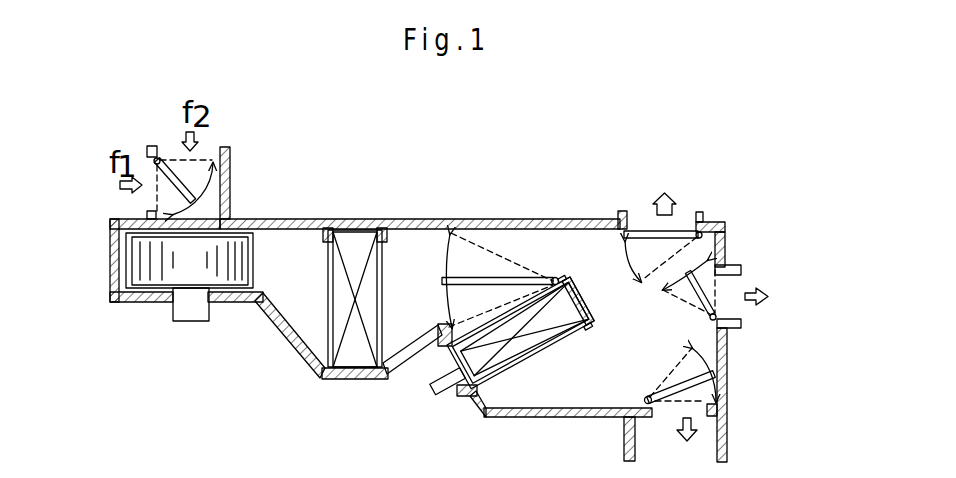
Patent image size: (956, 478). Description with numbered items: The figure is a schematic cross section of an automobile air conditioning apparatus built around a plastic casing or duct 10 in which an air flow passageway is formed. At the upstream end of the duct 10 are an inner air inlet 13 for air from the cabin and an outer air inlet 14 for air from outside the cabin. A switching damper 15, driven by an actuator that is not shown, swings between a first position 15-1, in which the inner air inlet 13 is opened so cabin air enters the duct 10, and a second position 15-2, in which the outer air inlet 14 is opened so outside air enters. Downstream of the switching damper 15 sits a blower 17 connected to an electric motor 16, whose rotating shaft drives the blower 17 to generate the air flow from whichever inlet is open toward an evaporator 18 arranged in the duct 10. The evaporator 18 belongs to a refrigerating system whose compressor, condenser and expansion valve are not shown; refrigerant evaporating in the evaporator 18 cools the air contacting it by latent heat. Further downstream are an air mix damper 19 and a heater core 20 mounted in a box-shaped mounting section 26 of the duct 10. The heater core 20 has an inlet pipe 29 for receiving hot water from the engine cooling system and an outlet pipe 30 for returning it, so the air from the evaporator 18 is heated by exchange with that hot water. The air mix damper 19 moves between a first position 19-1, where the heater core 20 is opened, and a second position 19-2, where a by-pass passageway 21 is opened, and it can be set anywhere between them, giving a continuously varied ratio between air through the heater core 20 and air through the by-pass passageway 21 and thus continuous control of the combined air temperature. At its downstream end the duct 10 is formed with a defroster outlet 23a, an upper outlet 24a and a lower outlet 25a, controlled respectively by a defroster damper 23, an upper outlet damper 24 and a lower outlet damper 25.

The casing or duct 10 is at (586, 200).
The inner air inlet 13 is at (156, 216).
The outer air inlet 14 is at (158, 148).
The switching damper 15 is at (190, 180).
The first position 15-1 is at (176, 155).
The second position 15-2 is at (152, 173).
The electric motor 16 is at (190, 321).
The blower 17 is at (250, 268).
The evaporator 18 is at (352, 229).
The air mix damper 19 is at (467, 277).
The first position 19-1 is at (503, 255).
The second position 19-2 is at (446, 308).
The heater core 20 is at (531, 348).
The by-pass passageway 21 is at (553, 250).
The defroster damper 23 is at (680, 228).
The defroster outlet 23a is at (703, 217).
The upper outlet damper 24 is at (705, 286).
The upper outlet 24a is at (740, 268).
The lower outlet damper 25 is at (722, 376).
The lower outlet 25a is at (728, 442).
The mounting section 26 is at (596, 308).
The inlet pipe 29 is at (414, 407).
The outlet pipe 30 is at (436, 386).